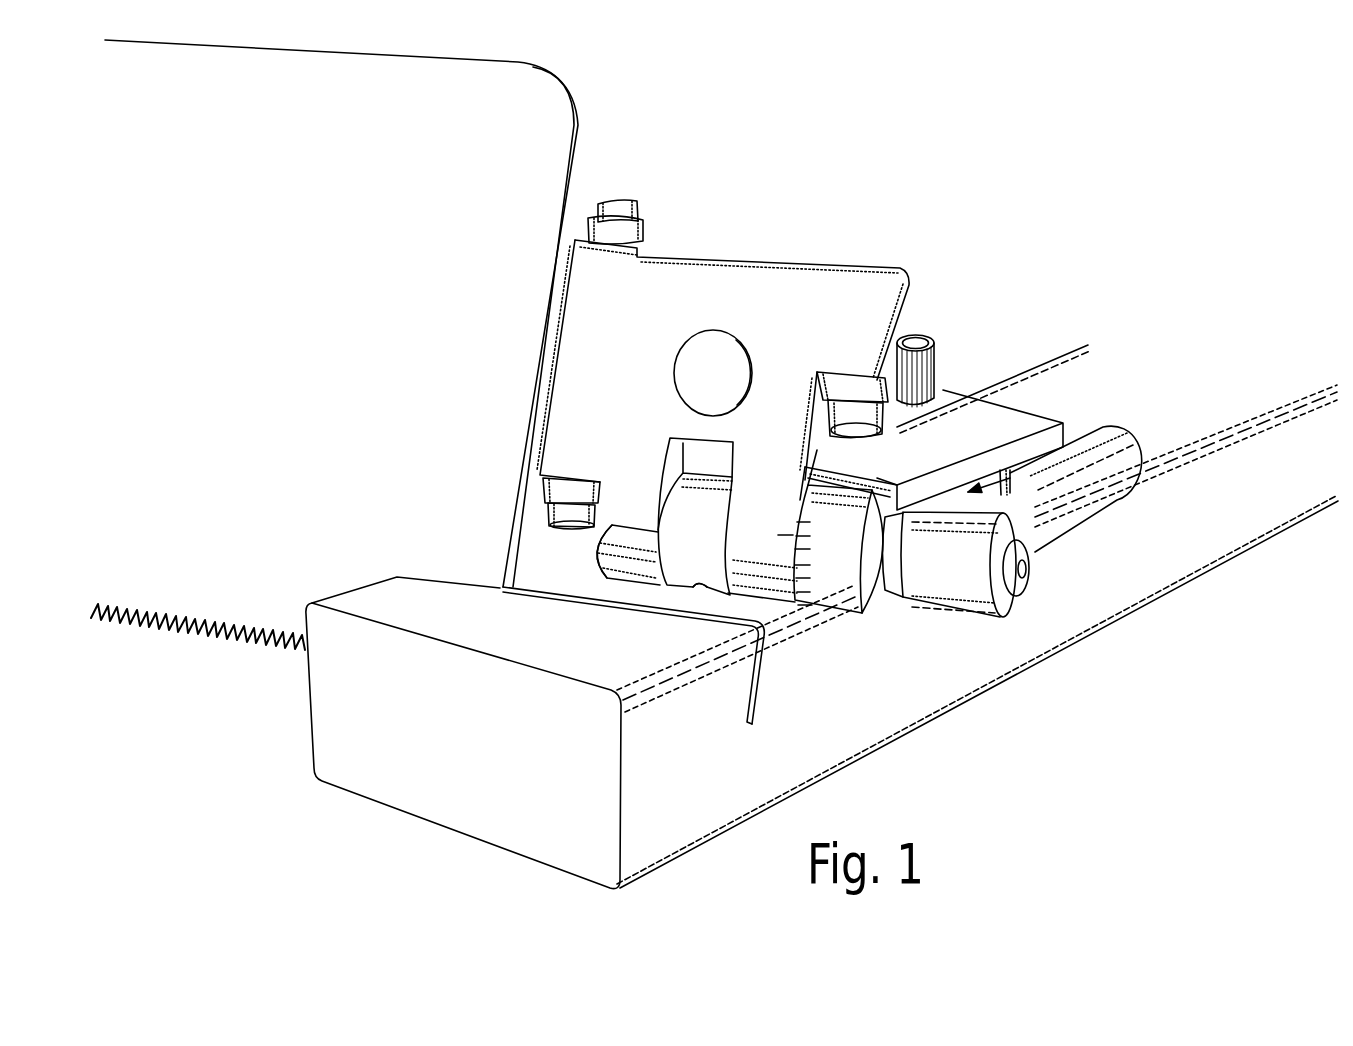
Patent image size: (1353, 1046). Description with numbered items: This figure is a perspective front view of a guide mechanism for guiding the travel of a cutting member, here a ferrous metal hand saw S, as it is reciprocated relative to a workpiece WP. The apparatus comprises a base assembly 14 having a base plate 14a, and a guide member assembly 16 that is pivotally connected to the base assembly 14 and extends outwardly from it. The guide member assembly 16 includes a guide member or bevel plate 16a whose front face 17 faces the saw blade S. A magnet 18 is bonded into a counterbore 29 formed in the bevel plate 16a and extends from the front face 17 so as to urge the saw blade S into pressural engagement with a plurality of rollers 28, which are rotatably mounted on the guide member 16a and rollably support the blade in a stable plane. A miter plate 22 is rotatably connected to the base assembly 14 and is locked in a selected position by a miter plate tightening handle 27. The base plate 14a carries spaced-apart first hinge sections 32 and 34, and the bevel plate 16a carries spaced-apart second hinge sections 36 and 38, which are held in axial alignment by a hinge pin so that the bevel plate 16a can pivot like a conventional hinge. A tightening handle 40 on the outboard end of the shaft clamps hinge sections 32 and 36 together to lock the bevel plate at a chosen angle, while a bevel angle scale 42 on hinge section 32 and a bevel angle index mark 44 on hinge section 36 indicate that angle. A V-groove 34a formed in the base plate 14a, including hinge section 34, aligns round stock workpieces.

The saw blade S is at (475, 110).
The workpiece WP is at (473, 795).
The base assembly 14 is at (1087, 497).
The base plate 14a is at (1032, 530).
The guide member assembly 16 is at (700, 248).
The guide member 16a is at (845, 290).
The front face 17 is at (617, 341).
The magnet 18 is at (710, 350).
The counterbore 29 is at (737, 345).
The rollers 28 is at (647, 232).
The miter plate tightening handle 27 is at (917, 333).
The miter plate 22 is at (1003, 432).
The tightening handle 40 is at (1087, 497).
The bevel angle scale 42 is at (888, 590).
The first hinge section 32 is at (845, 567).
The bevel angle index mark 44 is at (783, 535).
The second hinge section 36 is at (755, 537).
The second hinge section 38 is at (623, 527).
The first hinge section 34 is at (690, 537).
The V-groove 34a is at (690, 600).